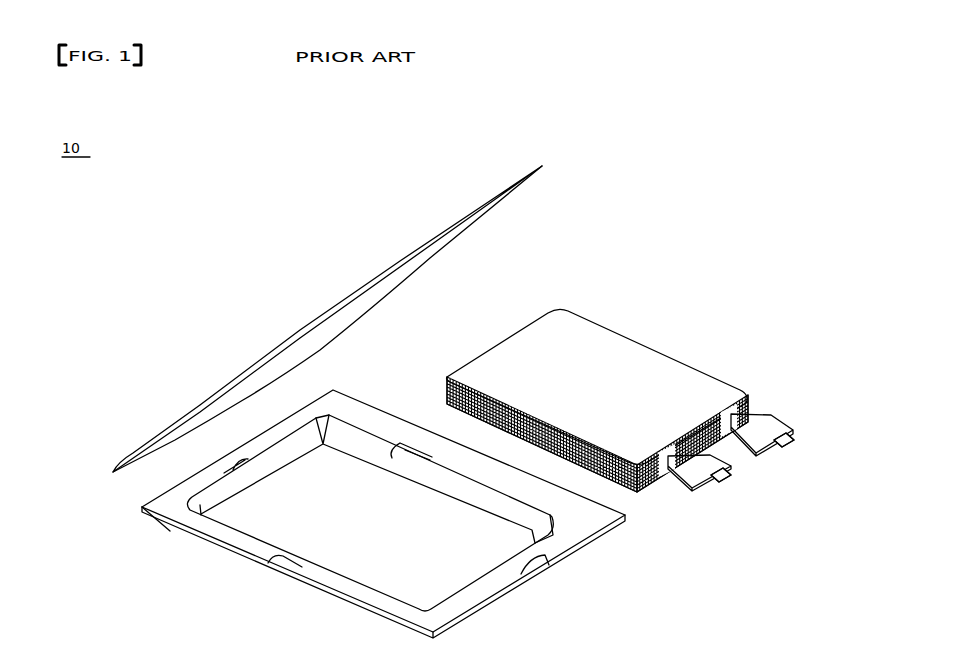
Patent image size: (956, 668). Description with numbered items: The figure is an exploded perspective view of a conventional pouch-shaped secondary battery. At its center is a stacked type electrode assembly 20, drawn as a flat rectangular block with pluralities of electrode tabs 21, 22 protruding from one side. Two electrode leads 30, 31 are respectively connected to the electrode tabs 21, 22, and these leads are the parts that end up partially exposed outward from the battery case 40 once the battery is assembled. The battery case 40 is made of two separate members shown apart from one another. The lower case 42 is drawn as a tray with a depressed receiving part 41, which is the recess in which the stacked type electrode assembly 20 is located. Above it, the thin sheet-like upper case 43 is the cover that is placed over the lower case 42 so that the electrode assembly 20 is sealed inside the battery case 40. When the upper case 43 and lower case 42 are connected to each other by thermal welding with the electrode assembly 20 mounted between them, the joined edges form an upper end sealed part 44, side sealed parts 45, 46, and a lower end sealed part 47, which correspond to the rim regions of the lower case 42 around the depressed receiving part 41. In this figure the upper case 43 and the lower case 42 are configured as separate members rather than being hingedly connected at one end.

The stacked type electrode assembly 20 is at (667, 333).
The electrode tab 21 is at (733, 414).
The electrode tab 22 is at (668, 457).
The electrode lead 30 is at (793, 443).
The electrode lead 31 is at (731, 480).
The battery case 40 is at (110, 598).
The depressed receiving part 41 is at (383, 530).
The lower case 42 is at (168, 532).
The upper case 43 is at (113, 470).
The upper end sealed part 44 is at (547, 559).
The side sealed part 45 is at (392, 458).
The side sealed part 46 is at (267, 562).
The lower end sealed part 47 is at (248, 459).